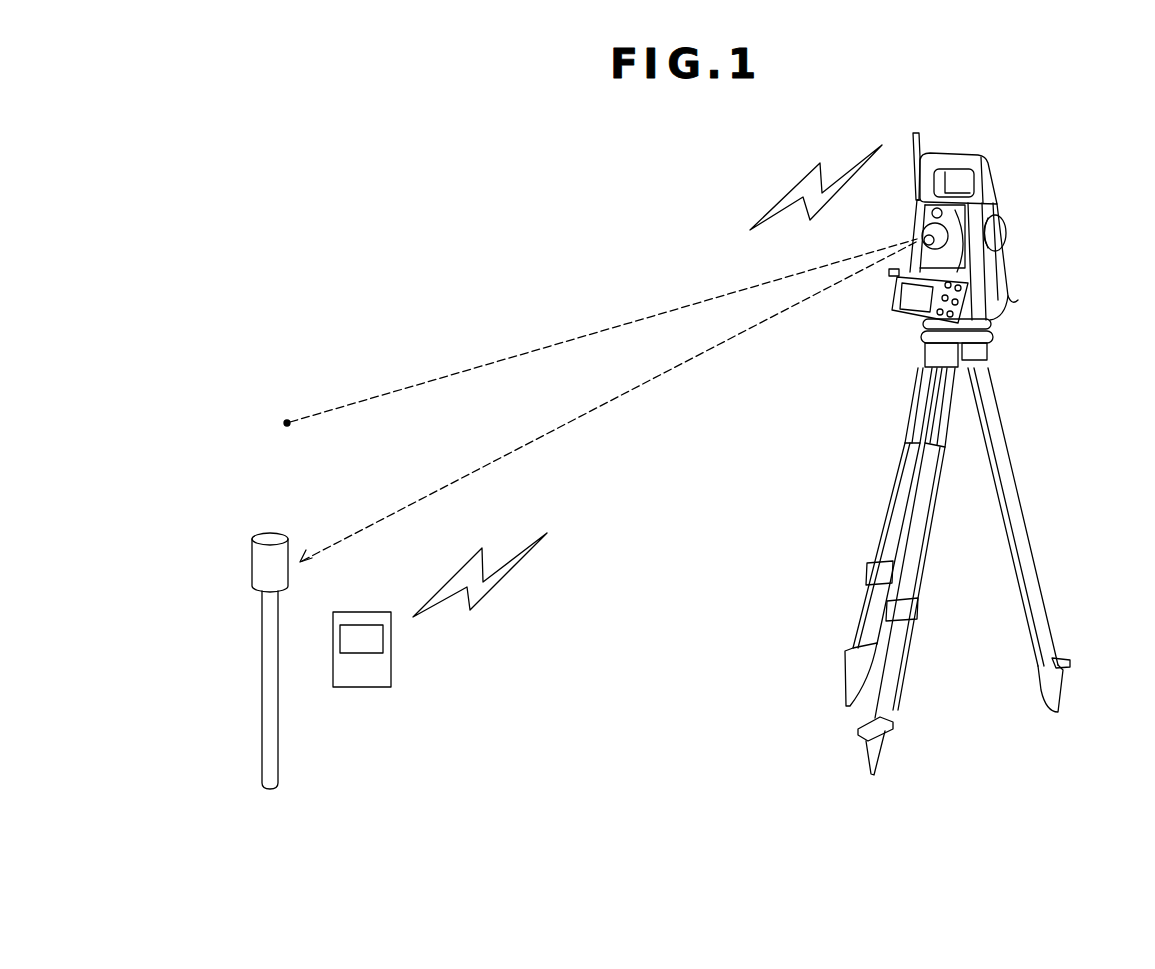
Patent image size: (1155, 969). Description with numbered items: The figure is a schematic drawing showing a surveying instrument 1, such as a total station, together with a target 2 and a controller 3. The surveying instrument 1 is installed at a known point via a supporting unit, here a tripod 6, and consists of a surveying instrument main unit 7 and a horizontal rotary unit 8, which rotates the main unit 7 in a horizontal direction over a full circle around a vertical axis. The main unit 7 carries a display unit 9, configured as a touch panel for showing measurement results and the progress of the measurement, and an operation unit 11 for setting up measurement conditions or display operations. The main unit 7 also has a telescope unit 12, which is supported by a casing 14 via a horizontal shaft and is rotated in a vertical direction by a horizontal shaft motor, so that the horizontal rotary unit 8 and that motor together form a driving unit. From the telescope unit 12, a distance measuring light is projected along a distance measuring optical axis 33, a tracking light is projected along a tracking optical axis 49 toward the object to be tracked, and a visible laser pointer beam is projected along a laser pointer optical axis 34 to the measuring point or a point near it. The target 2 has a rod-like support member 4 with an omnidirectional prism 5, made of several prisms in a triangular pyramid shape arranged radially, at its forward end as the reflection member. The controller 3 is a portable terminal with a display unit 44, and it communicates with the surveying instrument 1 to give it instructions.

The surveying instrument 1 is at (1001, 208).
The target 2 is at (260, 663).
The controller 3 is at (393, 670).
The support member 4 is at (280, 745).
The omnidirectional prism 5 is at (290, 580).
The tripod 6 is at (1008, 445).
The surveying instrument main unit 7 is at (993, 176).
The horizontal rotary unit 8 is at (993, 318).
The display unit 9 is at (895, 310).
The operation unit 11 is at (955, 300).
The telescope unit 12 is at (930, 233).
The casing 14 is at (1005, 261).
The distance measuring optical axis 33 is at (600, 332).
The laser pointer optical axis 34 is at (562, 343).
The display unit 44 is at (362, 625).
The tracking optical axis 49 is at (595, 410).